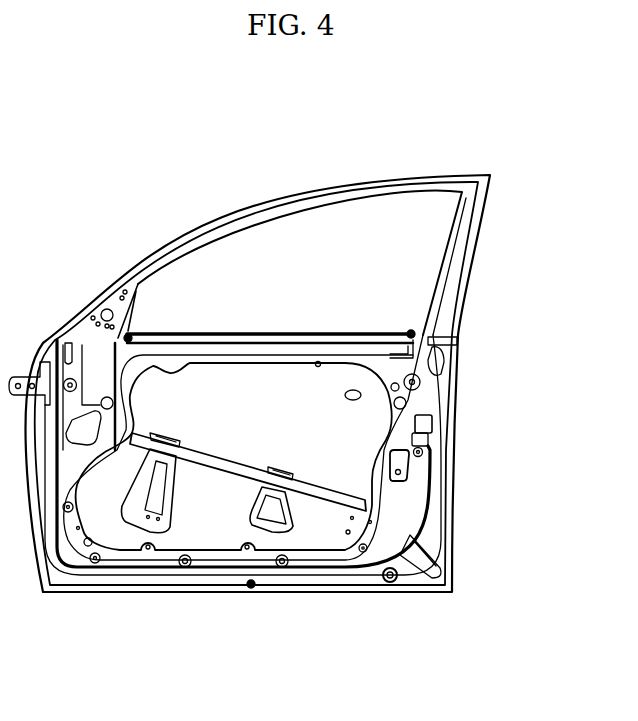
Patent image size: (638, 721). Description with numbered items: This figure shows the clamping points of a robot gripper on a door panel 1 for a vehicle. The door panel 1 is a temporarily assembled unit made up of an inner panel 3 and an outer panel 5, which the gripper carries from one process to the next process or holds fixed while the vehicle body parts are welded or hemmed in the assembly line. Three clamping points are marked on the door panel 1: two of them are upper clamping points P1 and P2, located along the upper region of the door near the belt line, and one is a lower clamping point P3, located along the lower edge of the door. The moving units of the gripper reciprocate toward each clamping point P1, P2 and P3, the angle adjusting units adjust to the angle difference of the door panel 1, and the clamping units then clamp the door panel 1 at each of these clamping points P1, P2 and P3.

The door panel 1 is at (480, 293).
The inner panel 3 is at (417, 513).
The outer panel 5 is at (316, 428).
The upper clamping point P1 is at (128, 336).
The upper clamping point P2 is at (411, 332).
The lower clamping point P3 is at (251, 589).